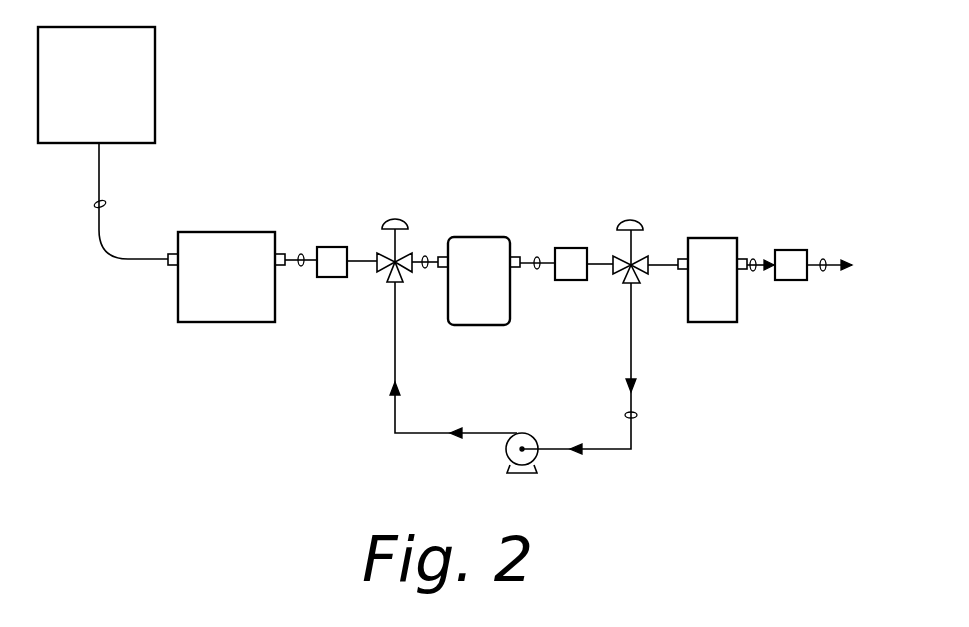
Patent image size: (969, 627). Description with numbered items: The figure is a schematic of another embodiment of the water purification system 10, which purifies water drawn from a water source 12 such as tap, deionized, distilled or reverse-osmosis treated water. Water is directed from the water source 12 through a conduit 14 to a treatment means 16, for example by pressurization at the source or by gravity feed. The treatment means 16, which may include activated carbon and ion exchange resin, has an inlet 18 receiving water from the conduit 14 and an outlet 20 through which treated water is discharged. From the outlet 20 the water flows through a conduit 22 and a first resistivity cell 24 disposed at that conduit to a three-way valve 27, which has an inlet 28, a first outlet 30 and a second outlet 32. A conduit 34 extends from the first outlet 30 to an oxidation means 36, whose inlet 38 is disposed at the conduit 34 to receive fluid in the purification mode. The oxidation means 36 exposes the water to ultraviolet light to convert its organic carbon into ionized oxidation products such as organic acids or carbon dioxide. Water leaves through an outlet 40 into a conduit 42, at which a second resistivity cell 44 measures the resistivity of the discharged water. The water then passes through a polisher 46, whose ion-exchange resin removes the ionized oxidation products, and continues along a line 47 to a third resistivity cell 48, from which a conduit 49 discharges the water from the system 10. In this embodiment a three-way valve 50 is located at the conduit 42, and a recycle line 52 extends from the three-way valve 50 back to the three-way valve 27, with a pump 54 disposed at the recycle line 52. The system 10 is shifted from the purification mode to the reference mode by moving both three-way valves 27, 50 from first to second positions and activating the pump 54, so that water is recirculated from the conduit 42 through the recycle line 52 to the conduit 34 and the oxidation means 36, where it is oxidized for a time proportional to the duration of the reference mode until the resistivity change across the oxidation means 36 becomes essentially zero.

The water purification system 10 is at (516, 88).
The water source 12 is at (110, 98).
The conduit 14 is at (94, 204).
The treatment means 16 is at (241, 281).
The inlet 18 is at (172, 266).
The outlet 20 is at (283, 266).
The conduit 22 is at (302, 254).
The first resistivity cell 24 is at (335, 278).
The three-way valve 27 is at (389, 206).
The inlet 28 is at (378, 274).
The first outlet 30 is at (406, 257).
The second outlet 32 is at (401, 283).
The conduit 34 is at (427, 255).
The oxidation means 36 is at (494, 286).
The inlet 38 is at (440, 268).
The outlet 40 is at (516, 268).
The conduit 42 is at (538, 256).
The second resistivity cell 44 is at (573, 282).
The polisher 46 is at (727, 282).
The line 47 is at (752, 258).
The third resistivity cell 48 is at (790, 250).
The conduit 49 is at (823, 272).
The three-way valve 50 is at (628, 215).
The recycle line 52 is at (640, 414).
The pump 54 is at (506, 456).